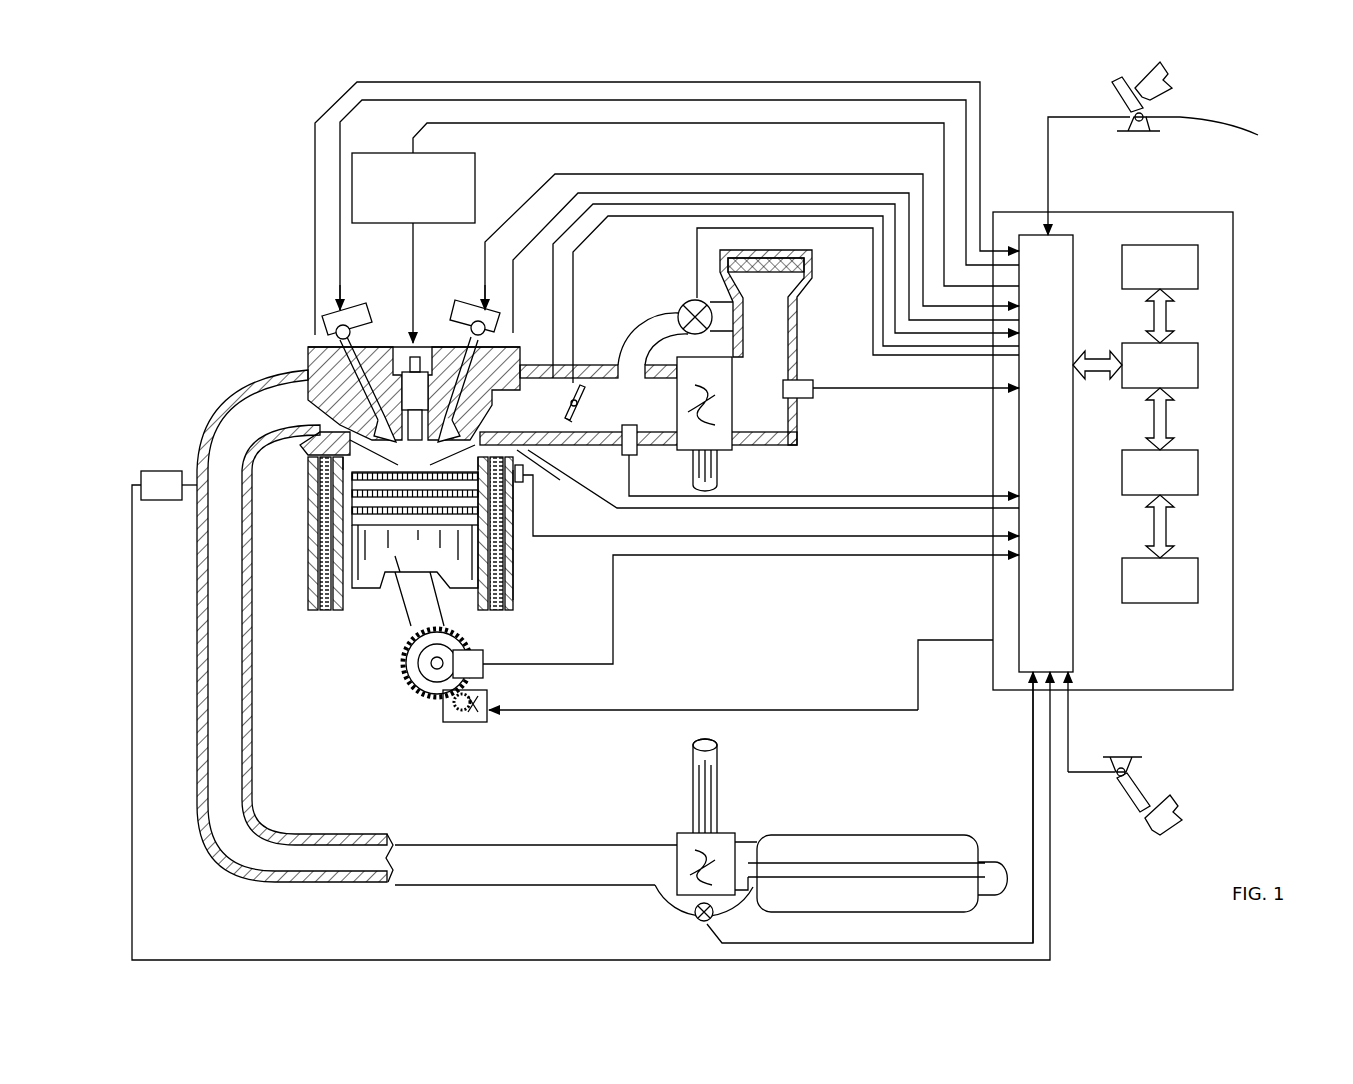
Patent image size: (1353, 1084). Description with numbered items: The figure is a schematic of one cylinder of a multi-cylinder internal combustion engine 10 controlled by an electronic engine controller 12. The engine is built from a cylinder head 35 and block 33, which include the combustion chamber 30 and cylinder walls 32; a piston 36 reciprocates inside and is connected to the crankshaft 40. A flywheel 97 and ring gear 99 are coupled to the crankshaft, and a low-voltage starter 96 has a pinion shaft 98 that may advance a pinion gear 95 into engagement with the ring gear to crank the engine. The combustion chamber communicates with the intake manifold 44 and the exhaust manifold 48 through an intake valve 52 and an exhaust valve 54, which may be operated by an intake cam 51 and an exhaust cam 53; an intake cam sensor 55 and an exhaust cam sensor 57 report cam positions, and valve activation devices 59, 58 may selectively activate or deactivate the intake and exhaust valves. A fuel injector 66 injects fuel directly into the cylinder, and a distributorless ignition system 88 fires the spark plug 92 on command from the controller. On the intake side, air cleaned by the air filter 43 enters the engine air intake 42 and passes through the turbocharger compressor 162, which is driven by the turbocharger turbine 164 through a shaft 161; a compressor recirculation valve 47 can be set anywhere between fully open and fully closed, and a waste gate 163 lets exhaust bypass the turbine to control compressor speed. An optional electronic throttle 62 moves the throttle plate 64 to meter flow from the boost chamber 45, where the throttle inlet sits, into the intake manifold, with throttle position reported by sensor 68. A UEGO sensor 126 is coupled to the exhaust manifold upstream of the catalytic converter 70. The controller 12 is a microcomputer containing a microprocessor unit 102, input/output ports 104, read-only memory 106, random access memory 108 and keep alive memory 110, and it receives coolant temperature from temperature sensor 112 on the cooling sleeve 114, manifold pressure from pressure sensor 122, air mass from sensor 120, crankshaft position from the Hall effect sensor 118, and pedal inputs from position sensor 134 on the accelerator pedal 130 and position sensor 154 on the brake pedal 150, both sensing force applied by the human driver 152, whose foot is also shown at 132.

The internal combustion engine 10 is at (235, 298).
The electronic engine controller 12 is at (1233, 212).
The combustion chamber 30 is at (413, 450).
The cylinder walls 32 is at (348, 600).
The block 33 is at (312, 500).
The cylinder head 35 is at (306, 345).
The piston 36 is at (395, 560).
The crankshaft 40 is at (418, 690).
The engine air intake 42 is at (632, 268).
The air filter 43 is at (782, 265).
The intake manifold 44 is at (539, 417).
The boost chamber 45 is at (647, 418).
The compressor recirculation valve 47 is at (683, 305).
The exhaust manifold 48 is at (287, 422).
The intake cam 51 is at (482, 318).
The intake valve 52 is at (462, 420).
The exhaust cam 53 is at (348, 318).
The exhaust valve 54 is at (375, 438).
The intake cam sensor 55 is at (498, 335).
The exhaust cam sensor 57 is at (333, 325).
The valve activation device 58 is at (358, 322).
The valve activation device 59 is at (471, 336).
The electronic throttle 62 is at (580, 400).
The throttle plate 64 is at (568, 418).
The fuel injector 66 is at (523, 473).
The throttle position sensor 68 is at (503, 370).
The catalytic converter 70 is at (800, 835).
The distributorless ignition system 88 is at (370, 153).
The spark plug 92 is at (420, 355).
The pinion gear 95 is at (470, 722).
The starter 96 is at (487, 718).
The flywheel 97 is at (405, 672).
The pinion shaft 98 is at (458, 712).
The ring gear 99 is at (435, 700).
The microprocessor unit 102 is at (1198, 360).
The input/output ports 104 is at (1075, 232).
The read-only memory 106 is at (1198, 258).
The random access memory 108 is at (1198, 468).
The keep alive memory 110 is at (1198, 575).
The temperature sensor 112 is at (533, 500).
The cooling sleeve 114 is at (515, 575).
The Hall effect sensor 118 is at (487, 660).
The air mass sensor 120 is at (810, 382).
The pressure sensor 122 is at (622, 450).
The Universal Exhaust Gas Oxygen sensor 126 is at (141, 478).
The accelerator pedal 130 is at (1118, 95).
The foot 132 is at (1170, 82).
The position sensor 134 is at (1221, 135).
The brake pedal 150 is at (1140, 820).
The human driver 152 is at (1175, 785).
The position sensor 154 is at (1113, 765).
The shaft 161 is at (717, 800).
The turbocharger compressor 162 is at (715, 435).
The waste gate 163 is at (697, 920).
The turbocharger turbine 164 is at (677, 835).